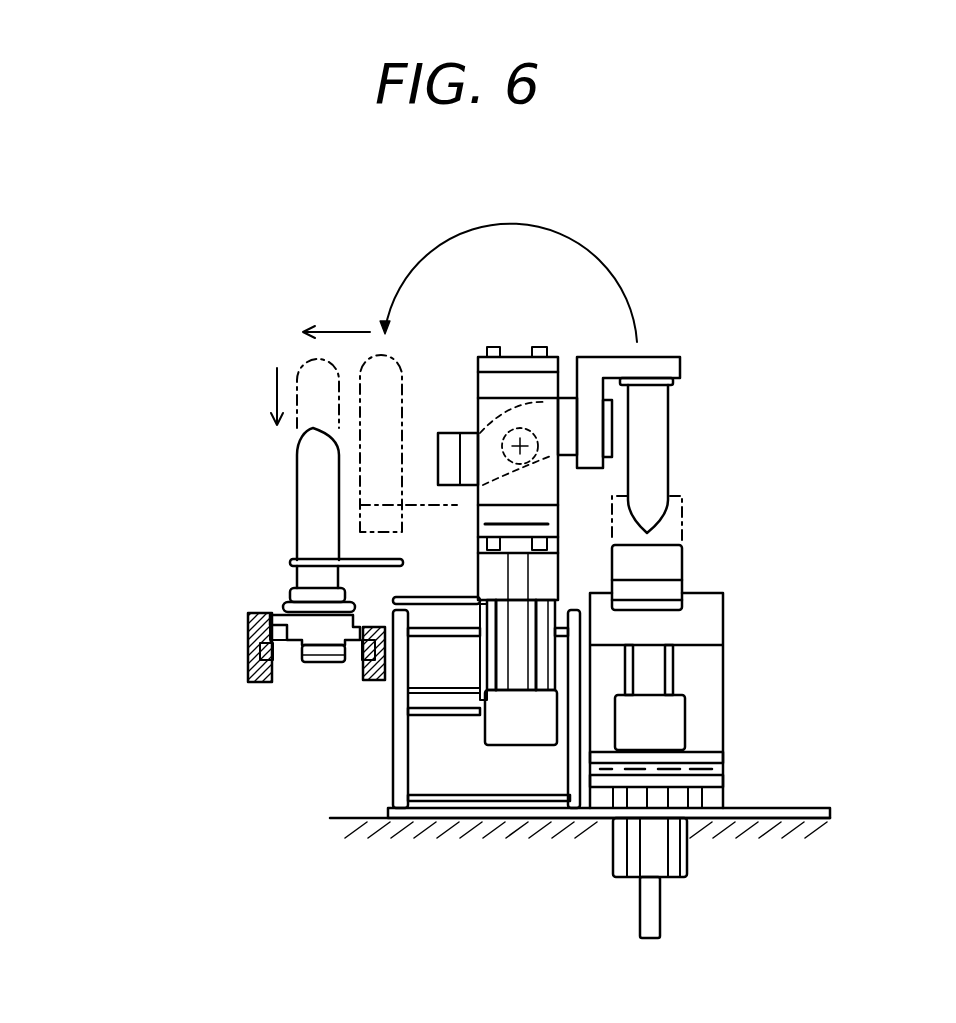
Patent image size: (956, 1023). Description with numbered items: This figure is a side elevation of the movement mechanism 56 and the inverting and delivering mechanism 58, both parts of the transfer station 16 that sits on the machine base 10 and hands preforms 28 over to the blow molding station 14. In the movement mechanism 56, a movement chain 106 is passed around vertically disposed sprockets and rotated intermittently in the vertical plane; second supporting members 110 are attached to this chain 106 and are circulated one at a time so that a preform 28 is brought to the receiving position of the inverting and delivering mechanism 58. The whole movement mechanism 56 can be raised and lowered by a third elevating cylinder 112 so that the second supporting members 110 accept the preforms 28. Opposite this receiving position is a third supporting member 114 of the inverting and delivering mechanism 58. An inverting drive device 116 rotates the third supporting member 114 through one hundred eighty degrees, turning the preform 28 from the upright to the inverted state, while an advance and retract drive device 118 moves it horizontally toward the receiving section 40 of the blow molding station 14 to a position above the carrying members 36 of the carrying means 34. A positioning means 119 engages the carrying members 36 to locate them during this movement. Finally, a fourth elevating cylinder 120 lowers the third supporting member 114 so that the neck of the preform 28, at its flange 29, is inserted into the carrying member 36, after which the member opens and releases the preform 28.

The machine base 10 is at (348, 832).
The blow molding station 14 is at (320, 288).
The transfer station 16 is at (660, 280).
The preform 28 is at (658, 460).
The flange plate 29 is at (377, 557).
The carrying means 34 is at (218, 643).
The carrying members 36 is at (297, 643).
The receiving section 40 is at (245, 621).
The movement mechanism 56 is at (715, 641).
The inverting and delivering mechanism 58 is at (316, 779).
The movement chain 106 is at (670, 686).
The second supporting members 110 is at (667, 570).
The third elevating cylinder 112 is at (677, 865).
The third supporting member 114 is at (660, 364).
The inverting drive device 116 is at (513, 393).
The advance and retract drive device 118 is at (452, 714).
The positioning means 119 is at (437, 605).
The fourth elevating cylinder 120 is at (500, 675).